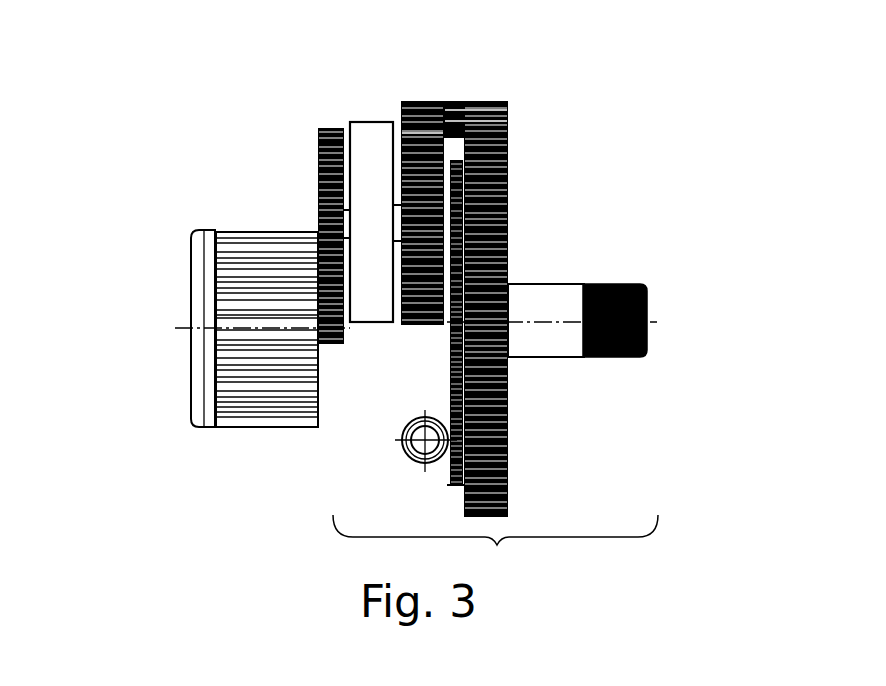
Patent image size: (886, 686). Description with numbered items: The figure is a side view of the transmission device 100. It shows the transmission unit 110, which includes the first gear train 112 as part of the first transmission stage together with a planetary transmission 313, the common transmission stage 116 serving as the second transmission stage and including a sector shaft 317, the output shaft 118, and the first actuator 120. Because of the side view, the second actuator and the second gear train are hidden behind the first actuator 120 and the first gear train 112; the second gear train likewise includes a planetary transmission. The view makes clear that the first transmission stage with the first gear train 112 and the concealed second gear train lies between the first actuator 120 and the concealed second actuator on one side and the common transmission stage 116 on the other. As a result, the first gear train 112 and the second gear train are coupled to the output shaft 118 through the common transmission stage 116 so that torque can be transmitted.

The transmission device 100 is at (118, 64).
The transmission unit 110 is at (495, 544).
The first gear train 112 is at (318, 158).
The common transmission stage 116 is at (477, 101).
The output shaft 118 is at (620, 284).
The first actuator 120 is at (228, 230).
The planetary transmission 313 is at (372, 122).
The sector shaft 317 is at (508, 181).